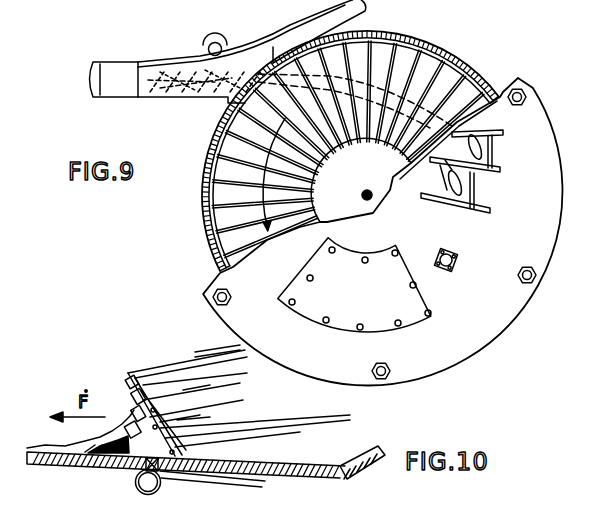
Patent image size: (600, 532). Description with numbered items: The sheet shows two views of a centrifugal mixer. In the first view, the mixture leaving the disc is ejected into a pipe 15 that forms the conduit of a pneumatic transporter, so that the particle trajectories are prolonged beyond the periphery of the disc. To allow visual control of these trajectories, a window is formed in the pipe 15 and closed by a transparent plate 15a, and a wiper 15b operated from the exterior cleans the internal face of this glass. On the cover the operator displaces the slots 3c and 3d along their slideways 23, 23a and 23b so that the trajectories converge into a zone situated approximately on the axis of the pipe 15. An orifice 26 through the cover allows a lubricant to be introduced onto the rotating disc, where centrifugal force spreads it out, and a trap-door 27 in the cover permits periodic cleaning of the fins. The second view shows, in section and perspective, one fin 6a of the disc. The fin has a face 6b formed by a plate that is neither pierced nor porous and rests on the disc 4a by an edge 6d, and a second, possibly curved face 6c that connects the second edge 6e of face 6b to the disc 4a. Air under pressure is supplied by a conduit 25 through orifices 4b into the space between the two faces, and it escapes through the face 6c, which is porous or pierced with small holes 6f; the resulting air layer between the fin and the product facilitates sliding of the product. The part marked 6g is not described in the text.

In FIG. 9, the pipe 15 is at (152, 63).
In FIG. 9, the transparent plate 15a is at (175, 82).
In FIG. 9, the wiper 15b is at (193, 62).
In FIG. 9, the slideway 23 is at (489, 180).
In FIG. 9, the slideway 23a is at (487, 212).
In FIG. 9, the slideway 23b is at (503, 133).
In FIG. 9, the slot 3c is at (457, 207).
In FIG. 9, the slot 3d is at (500, 165).
In FIG. 9, the orifice 26 is at (456, 262).
In FIG. 9, the trap-door 27 is at (420, 323).
In FIG. 10, the fin 6a is at (163, 355).
In FIG. 10, the face 6b is at (248, 413).
In FIG. 10, the face 6c is at (87, 467).
In FIG. 10, the edge 6d is at (305, 427).
In FIG. 10, the second edge 6e is at (198, 361).
In FIG. 10, the small holes 6f is at (101, 467).
In FIG. 10, the rod 6g is at (185, 479).
In FIG. 10, the disc 4a is at (352, 478).
In FIG. 10, the orifices 4b is at (149, 472).
In FIG. 10, the conduit 25 is at (153, 488).